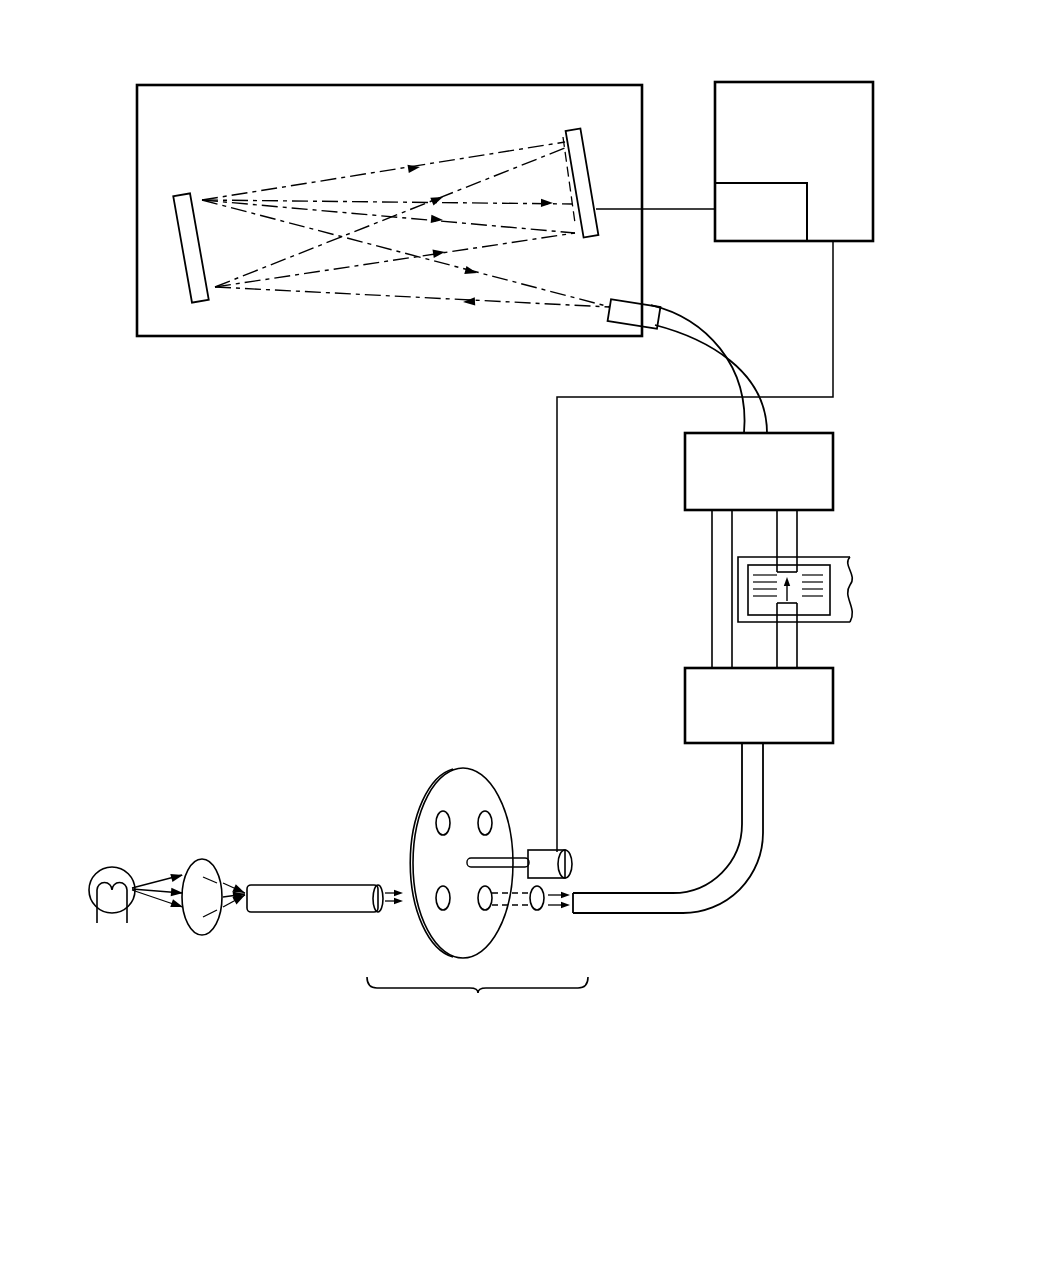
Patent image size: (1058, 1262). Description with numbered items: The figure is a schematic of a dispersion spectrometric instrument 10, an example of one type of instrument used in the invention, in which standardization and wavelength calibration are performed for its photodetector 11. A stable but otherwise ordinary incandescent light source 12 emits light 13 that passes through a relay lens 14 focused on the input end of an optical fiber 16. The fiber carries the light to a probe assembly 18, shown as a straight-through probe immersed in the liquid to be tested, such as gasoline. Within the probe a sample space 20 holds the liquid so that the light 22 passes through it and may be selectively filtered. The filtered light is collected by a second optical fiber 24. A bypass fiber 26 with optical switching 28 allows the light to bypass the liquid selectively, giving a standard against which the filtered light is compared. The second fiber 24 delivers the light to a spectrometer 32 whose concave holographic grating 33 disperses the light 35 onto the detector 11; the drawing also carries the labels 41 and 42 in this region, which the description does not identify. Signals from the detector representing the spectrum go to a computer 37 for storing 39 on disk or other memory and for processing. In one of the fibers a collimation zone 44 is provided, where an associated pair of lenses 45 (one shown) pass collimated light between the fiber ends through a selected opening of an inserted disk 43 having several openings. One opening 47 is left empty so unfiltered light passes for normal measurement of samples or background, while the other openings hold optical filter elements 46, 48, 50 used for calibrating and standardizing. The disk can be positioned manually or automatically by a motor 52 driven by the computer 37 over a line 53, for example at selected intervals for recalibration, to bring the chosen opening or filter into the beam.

The instrument 10 is at (330, 633).
The photodetector 11 is at (563, 131).
The incandescent light source 12 is at (95, 867).
The light 13 is at (148, 880).
The relay lens 14 is at (203, 857).
The optical fiber 16 is at (292, 913).
The probe assembly 18 is at (786, 581).
The sample space 20 is at (850, 587).
The light 22 is at (793, 597).
The second optical fiber 24 is at (767, 413).
The bypass fiber 26 is at (712, 617).
The optical switching 28 is at (835, 480).
The spectrometer 32 is at (288, 337).
The concave holographic grating 33 is at (200, 303).
The dispersed light 35 is at (307, 182).
The computer 37 is at (773, 82).
The store 39 is at (787, 242).
The light beam to detector 41 is at (543, 205).
The detector output line 42 is at (662, 209).
The disk 43 is at (463, 824).
The collimation zone 44 is at (507, 846).
The pair of lenses 45 is at (533, 910).
The optical filter element 46 is at (445, 910).
The empty opening 47 is at (485, 908).
The optical filter element 48 is at (437, 817).
The optical filter element 50 is at (492, 823).
The motor 52 is at (568, 857).
The line 53 is at (557, 623).